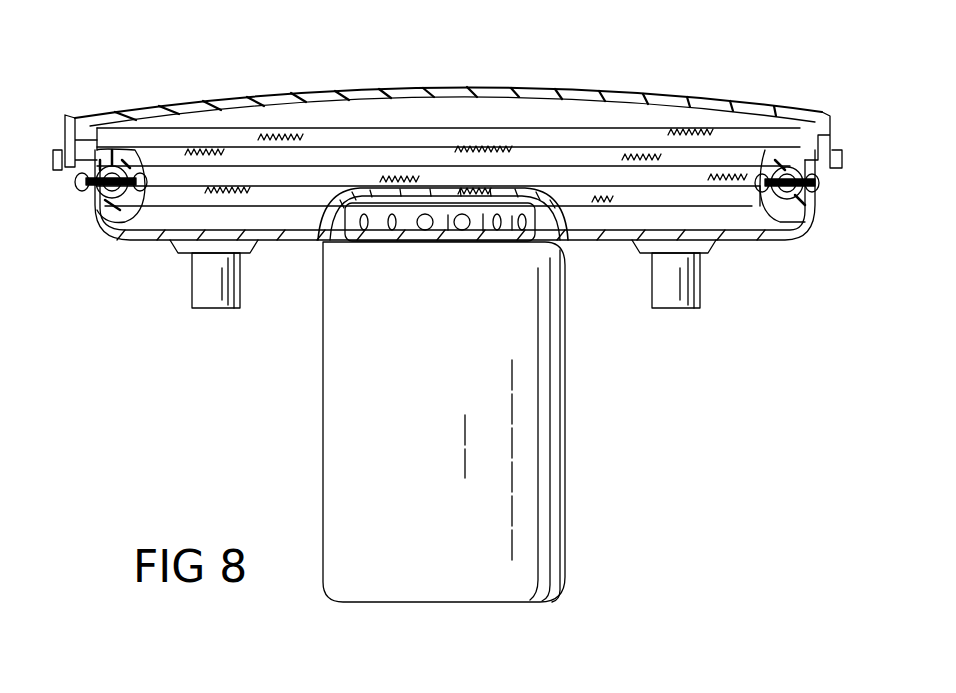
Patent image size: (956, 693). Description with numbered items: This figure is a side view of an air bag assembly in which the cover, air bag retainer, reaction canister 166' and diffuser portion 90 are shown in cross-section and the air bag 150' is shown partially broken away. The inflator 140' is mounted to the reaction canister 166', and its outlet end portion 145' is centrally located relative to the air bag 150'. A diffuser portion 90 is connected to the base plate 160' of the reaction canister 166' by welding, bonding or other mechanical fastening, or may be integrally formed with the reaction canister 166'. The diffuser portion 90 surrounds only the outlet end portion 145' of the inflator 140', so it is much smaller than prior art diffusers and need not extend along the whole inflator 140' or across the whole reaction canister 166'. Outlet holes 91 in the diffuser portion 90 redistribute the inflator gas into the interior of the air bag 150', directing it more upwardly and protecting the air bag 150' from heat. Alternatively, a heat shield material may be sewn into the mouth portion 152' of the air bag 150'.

The air bag 150' is at (448, 131).
The mouth portion 152' is at (97, 135).
The reaction canister 166' is at (822, 201).
The base plate 160' is at (460, 240).
The diffuser portion 90 is at (322, 218).
The outlet end portion 145' is at (497, 248).
The outlet holes 91 is at (537, 190).
The inflator 140' is at (511, 422).